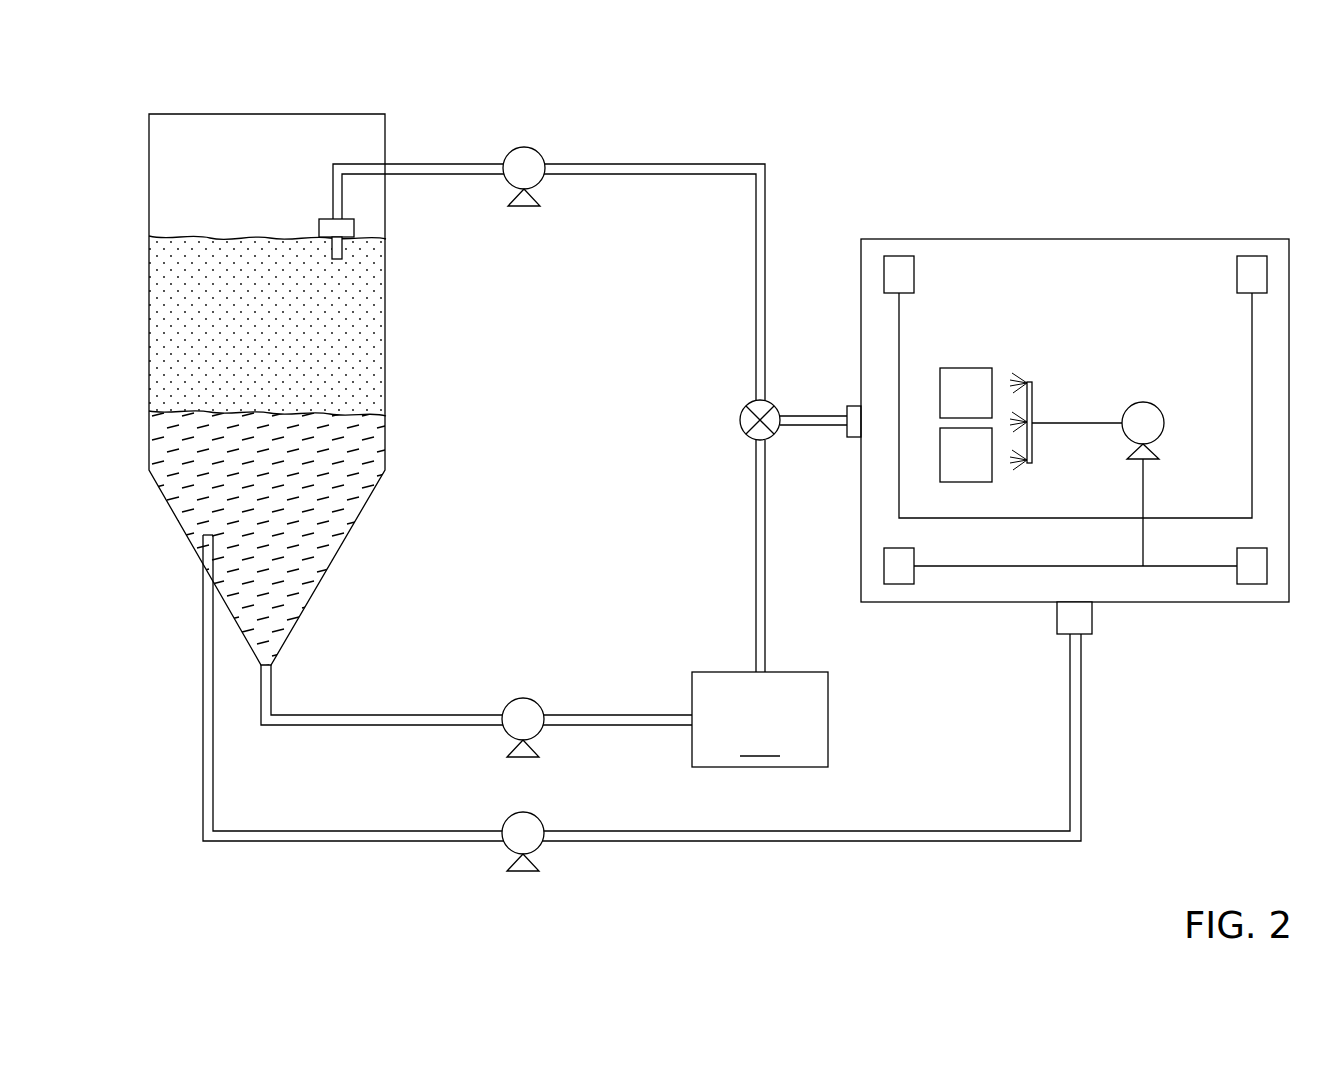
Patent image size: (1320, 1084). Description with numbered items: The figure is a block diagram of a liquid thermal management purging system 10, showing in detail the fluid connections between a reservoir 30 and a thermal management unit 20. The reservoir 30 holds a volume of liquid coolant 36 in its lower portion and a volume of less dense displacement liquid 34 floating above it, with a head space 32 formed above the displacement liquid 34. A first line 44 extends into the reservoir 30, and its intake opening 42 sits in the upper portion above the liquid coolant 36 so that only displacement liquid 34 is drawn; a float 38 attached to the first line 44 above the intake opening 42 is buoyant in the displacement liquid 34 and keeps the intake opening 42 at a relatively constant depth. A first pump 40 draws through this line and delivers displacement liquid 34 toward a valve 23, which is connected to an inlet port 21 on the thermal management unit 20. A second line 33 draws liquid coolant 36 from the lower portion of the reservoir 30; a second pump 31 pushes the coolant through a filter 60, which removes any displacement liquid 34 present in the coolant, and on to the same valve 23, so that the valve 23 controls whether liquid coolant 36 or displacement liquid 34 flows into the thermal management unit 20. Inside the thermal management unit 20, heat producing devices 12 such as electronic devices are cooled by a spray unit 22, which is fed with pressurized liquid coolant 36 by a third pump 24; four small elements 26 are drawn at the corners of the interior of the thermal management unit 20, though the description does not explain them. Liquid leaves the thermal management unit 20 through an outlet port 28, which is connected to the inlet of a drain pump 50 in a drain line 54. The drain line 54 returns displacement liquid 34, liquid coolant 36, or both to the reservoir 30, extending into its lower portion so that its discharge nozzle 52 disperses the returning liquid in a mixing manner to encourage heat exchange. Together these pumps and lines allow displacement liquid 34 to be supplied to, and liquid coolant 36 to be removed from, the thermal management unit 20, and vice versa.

The liquid thermal management purging system 10 is at (1173, 118).
The heat producing devices 12 is at (986, 410).
The thermal management unit 20 is at (1022, 237).
The inlet port 21 is at (850, 406).
The spray unit 22 is at (1035, 383).
The valve 23 is at (740, 420).
The third pump 24 is at (1155, 408).
The sensors 26 is at (890, 256).
The outlet port 28 is at (1092, 622).
The reservoir 30 is at (385, 141).
The second pump 31 is at (540, 701).
The head space 32 is at (277, 199).
The second line 33 is at (370, 715).
The displacement liquid 34 is at (278, 351).
The liquid coolant 36 is at (278, 496).
The float 38 is at (355, 228).
The first pump 40 is at (535, 150).
The intake opening 42 is at (345, 255).
The first line 44 is at (410, 175).
The drain pump 50 is at (540, 848).
The discharge nozzle 52 is at (208, 540).
The drain line 54 is at (362, 841).
The filter 60 is at (760, 719).